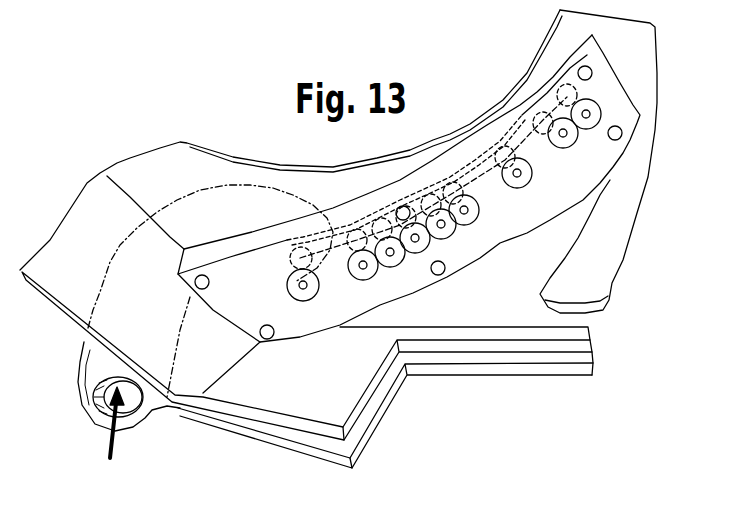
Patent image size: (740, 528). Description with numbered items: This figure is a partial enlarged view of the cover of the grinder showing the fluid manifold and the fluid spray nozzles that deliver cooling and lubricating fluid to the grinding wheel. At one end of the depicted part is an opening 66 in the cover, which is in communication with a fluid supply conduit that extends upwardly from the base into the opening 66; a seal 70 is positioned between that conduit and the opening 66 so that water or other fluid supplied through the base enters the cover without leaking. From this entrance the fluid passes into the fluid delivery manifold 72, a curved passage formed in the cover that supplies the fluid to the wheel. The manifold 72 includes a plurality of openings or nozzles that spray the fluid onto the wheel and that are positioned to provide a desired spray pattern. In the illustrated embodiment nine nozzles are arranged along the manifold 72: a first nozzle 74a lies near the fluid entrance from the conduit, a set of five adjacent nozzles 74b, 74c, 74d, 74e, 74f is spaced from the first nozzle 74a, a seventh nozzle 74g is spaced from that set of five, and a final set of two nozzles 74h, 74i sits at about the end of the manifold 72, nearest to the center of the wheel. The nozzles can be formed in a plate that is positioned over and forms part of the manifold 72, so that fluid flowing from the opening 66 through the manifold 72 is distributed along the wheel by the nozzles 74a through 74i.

The opening 66 is at (127, 407).
The seal 70 is at (263, 272).
The fluid delivery manifold 72 is at (557, 112).
The first nozzle 74a is at (303, 301).
The nozzle 74b is at (363, 280).
The nozzle 74c is at (403, 260).
The nozzle 74d is at (429, 245).
The nozzle 74e is at (455, 230).
The nozzle 74f is at (479, 214).
The seventh nozzle 74g is at (530, 180).
The nozzle 74h is at (575, 141).
The nozzle 74i is at (600, 111).